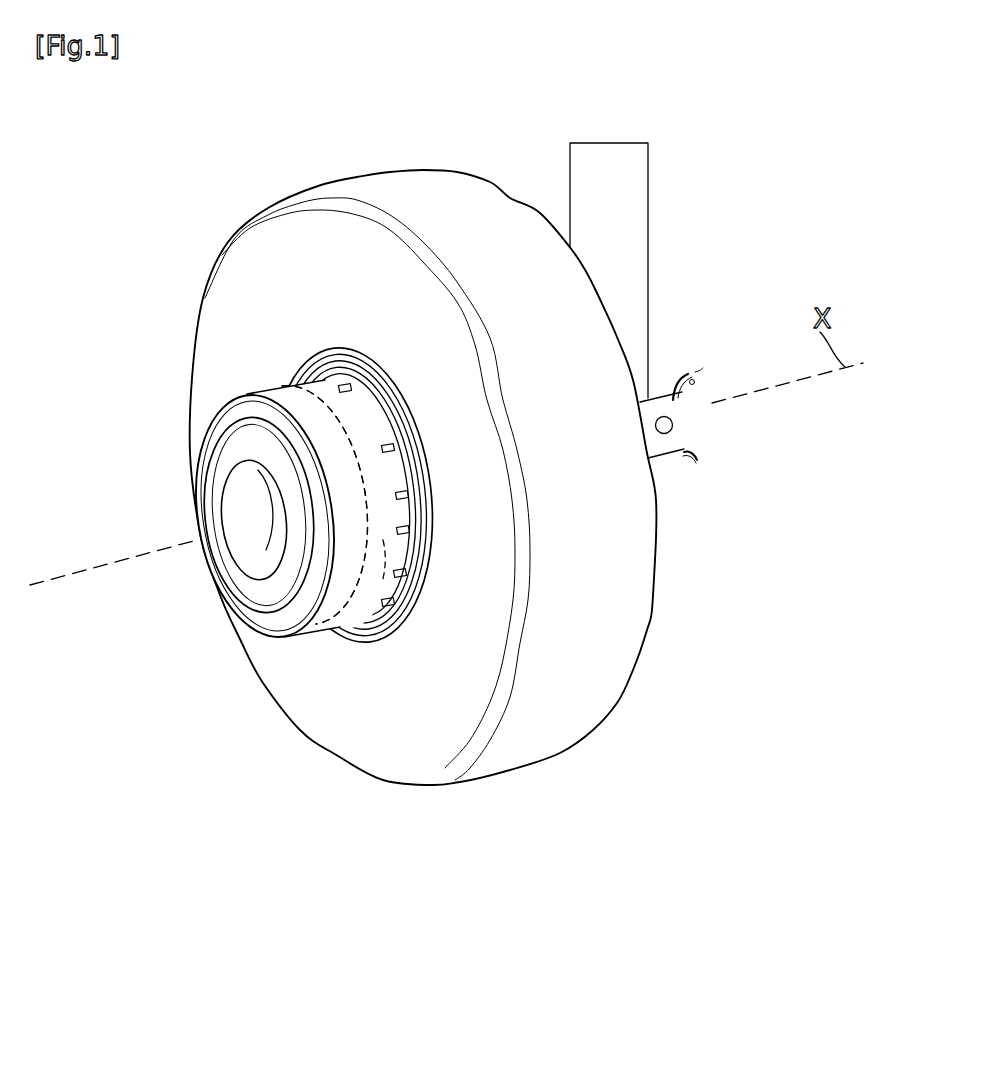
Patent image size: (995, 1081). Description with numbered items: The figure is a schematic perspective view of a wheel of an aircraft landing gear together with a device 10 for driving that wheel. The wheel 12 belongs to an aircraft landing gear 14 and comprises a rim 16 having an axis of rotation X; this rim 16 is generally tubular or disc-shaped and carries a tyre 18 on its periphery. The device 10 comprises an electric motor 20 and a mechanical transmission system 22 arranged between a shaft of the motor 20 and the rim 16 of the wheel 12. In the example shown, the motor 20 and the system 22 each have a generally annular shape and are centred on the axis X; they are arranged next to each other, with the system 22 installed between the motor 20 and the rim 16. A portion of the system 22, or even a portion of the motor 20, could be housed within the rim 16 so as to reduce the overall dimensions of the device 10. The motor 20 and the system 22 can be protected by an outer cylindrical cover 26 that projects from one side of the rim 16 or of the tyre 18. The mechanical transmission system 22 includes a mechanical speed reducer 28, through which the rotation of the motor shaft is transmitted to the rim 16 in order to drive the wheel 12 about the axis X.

The device 10 is at (404, 482).
The wheel 12 is at (461, 519).
The aircraft landing gear 14 is at (679, 148).
The rim 16 is at (315, 354).
The tyre 18 is at (650, 627).
The electric motor 20 is at (248, 592).
The mechanical transmission system 22 is at (357, 613).
The outer cylindrical cover 26 is at (210, 475).
The mechanical speed reducer 28 is at (357, 613).